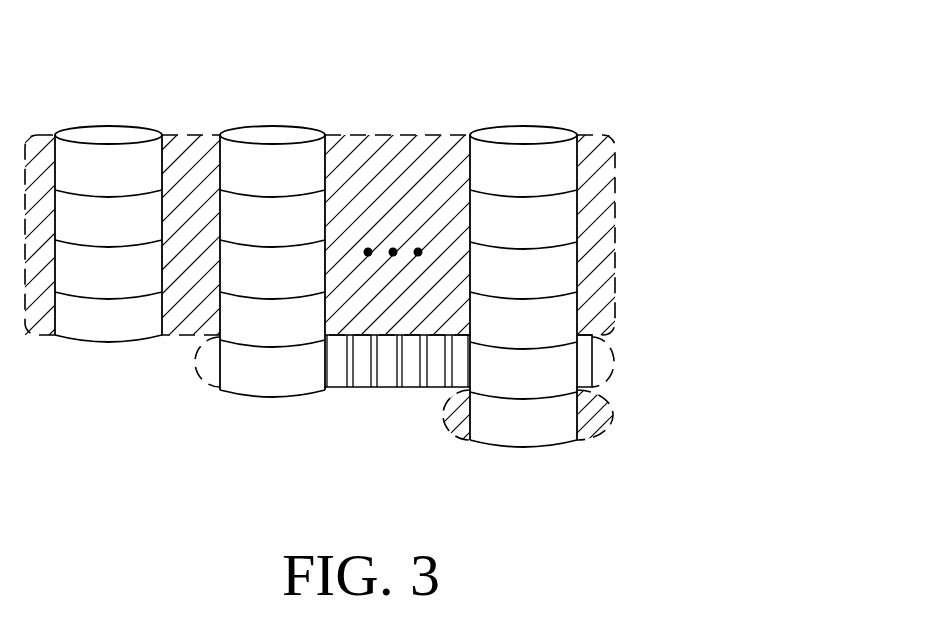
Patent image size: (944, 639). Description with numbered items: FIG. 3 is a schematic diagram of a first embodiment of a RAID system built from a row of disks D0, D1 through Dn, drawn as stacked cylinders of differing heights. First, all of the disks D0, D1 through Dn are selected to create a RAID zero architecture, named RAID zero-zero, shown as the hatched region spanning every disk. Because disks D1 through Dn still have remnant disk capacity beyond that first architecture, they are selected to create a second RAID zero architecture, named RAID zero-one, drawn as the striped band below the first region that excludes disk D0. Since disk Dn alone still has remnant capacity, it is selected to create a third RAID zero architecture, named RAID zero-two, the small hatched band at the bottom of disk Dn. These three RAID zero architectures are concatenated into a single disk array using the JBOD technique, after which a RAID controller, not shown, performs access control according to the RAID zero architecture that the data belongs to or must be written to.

The disk D0 is at (112, 133).
The disk D1 is at (274, 133).
The disk Dn is at (524, 133).